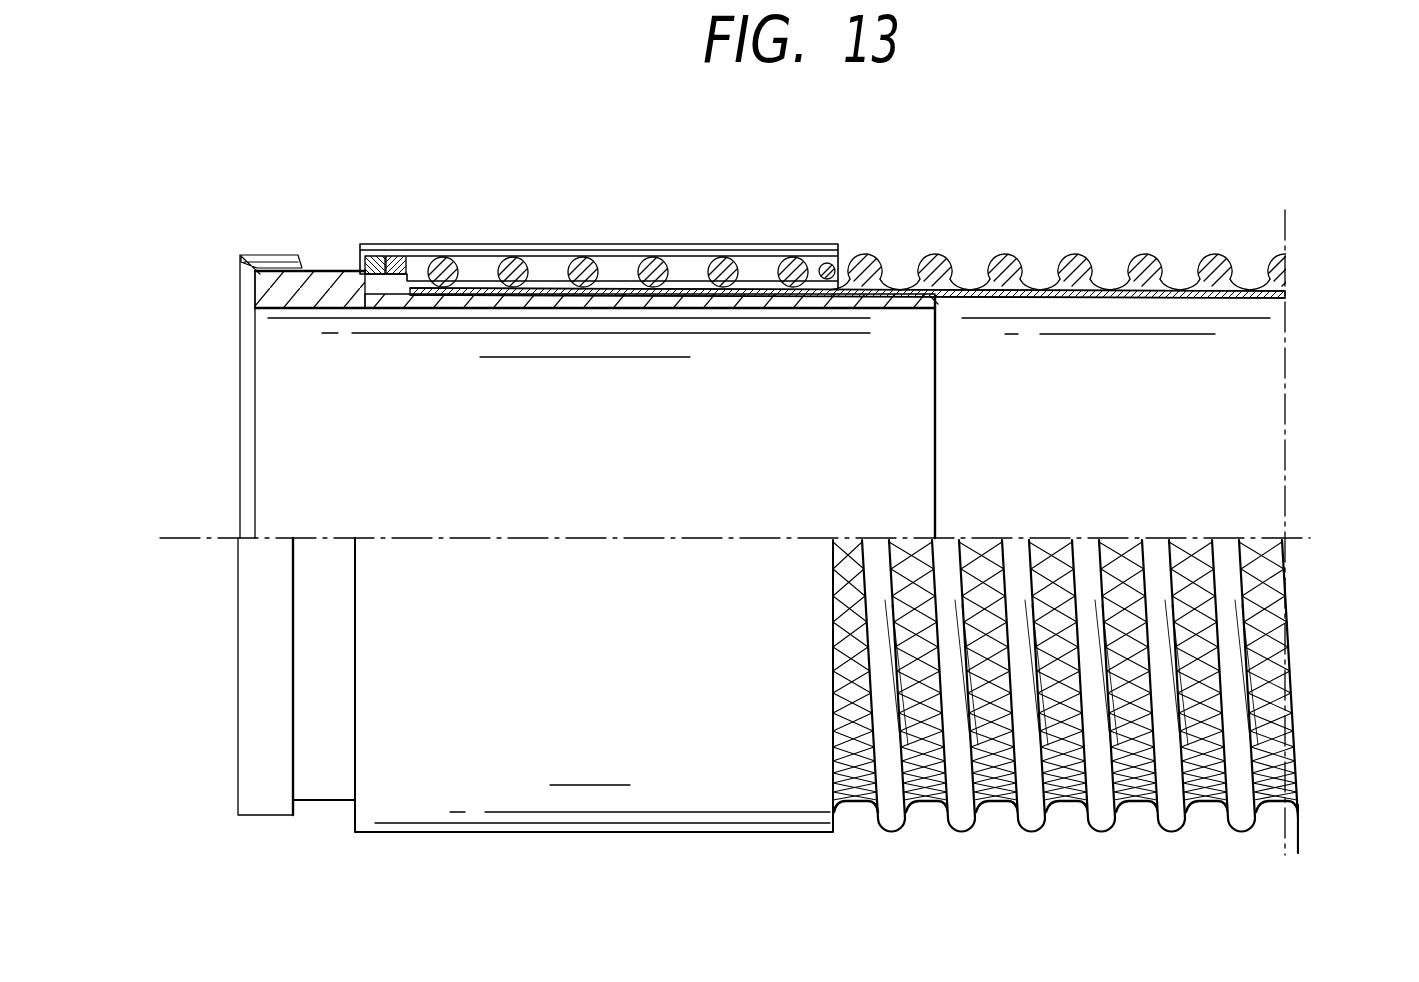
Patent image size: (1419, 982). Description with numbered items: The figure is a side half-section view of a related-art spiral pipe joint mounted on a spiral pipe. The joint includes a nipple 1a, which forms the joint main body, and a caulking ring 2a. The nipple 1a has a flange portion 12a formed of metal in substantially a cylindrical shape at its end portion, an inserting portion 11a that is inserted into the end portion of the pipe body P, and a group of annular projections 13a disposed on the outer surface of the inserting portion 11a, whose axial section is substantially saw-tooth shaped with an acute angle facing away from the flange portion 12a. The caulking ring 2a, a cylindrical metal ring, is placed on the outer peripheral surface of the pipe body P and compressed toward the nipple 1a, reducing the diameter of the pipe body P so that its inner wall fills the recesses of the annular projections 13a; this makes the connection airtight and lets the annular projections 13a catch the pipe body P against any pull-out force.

The nipple 1a is at (240, 655).
The caulking ring 2a is at (508, 244).
The inserting portion 11a is at (938, 415).
The flange portion 12a is at (300, 262).
The group of annular projections 13a is at (702, 292).
The pipe body P is at (1297, 700).